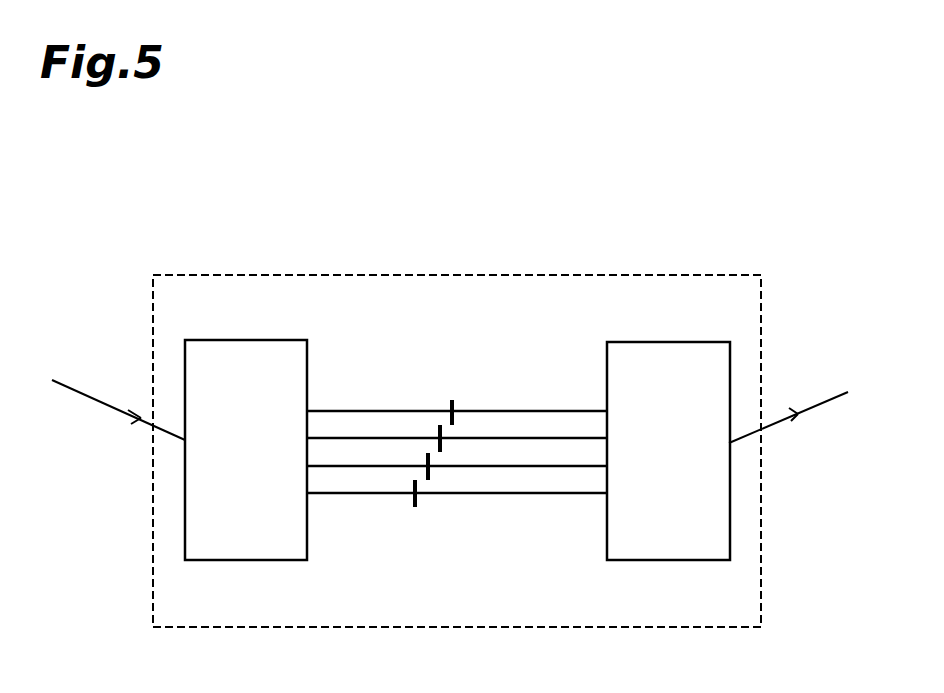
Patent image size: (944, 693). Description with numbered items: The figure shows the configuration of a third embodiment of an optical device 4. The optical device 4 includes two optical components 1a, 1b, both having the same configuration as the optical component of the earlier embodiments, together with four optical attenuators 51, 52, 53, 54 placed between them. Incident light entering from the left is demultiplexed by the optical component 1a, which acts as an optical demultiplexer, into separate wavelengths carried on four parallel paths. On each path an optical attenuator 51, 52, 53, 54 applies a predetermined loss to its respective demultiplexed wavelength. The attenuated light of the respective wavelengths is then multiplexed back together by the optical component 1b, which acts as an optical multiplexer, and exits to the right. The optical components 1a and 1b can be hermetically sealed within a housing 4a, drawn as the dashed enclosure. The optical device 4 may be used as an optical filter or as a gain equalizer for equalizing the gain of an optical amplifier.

The optical device 4 is at (594, 247).
The housing 4a is at (761, 302).
The optical component (optical demultiplexer) 1a is at (252, 348).
The optical component (optical multiplexer) 1b is at (673, 352).
The optical attenuator 51 is at (455, 400).
The optical attenuator 52 is at (440, 428).
The optical attenuator 53 is at (428, 476).
The optical attenuator 54 is at (412, 500).